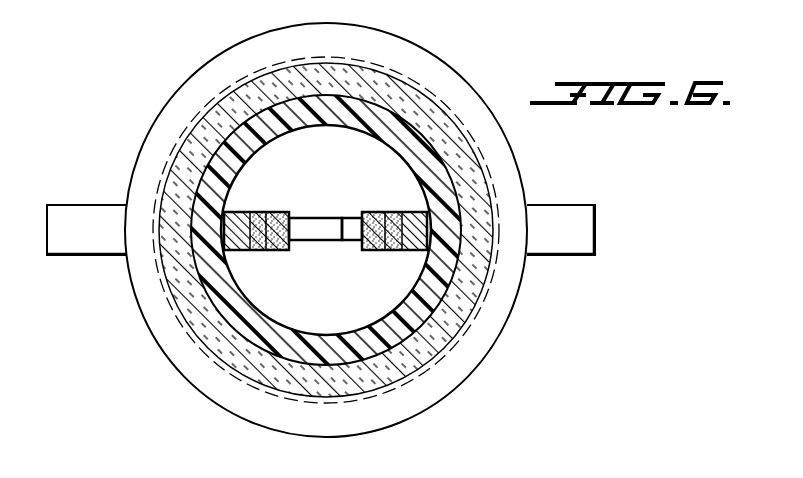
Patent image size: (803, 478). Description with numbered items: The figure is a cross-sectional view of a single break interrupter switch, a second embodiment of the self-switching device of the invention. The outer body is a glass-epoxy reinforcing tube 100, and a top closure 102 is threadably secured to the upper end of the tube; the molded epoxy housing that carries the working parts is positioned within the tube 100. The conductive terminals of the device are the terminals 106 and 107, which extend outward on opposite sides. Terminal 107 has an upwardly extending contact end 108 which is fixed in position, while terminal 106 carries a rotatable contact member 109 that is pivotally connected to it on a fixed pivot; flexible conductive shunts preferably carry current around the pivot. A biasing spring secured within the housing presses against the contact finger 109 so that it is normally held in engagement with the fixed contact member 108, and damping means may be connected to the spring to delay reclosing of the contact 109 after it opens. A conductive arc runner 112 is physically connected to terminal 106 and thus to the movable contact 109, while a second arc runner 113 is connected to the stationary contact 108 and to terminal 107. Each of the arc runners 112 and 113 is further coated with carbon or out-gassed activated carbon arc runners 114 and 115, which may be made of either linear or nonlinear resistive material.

The glass-epoxy reinforcing tube 100 is at (455, 322).
The top closure 102 is at (430, 63).
The terminal 106 is at (87, 240).
The terminal 107 is at (560, 256).
The contact end 108 is at (352, 243).
The rotatable contact member 109 is at (325, 200).
The conductive arc runner 112 is at (238, 250).
The second arc runner 113 is at (394, 253).
The carbon arc runner coating 114 is at (272, 212).
The carbon arc runner coating 115 is at (382, 212).